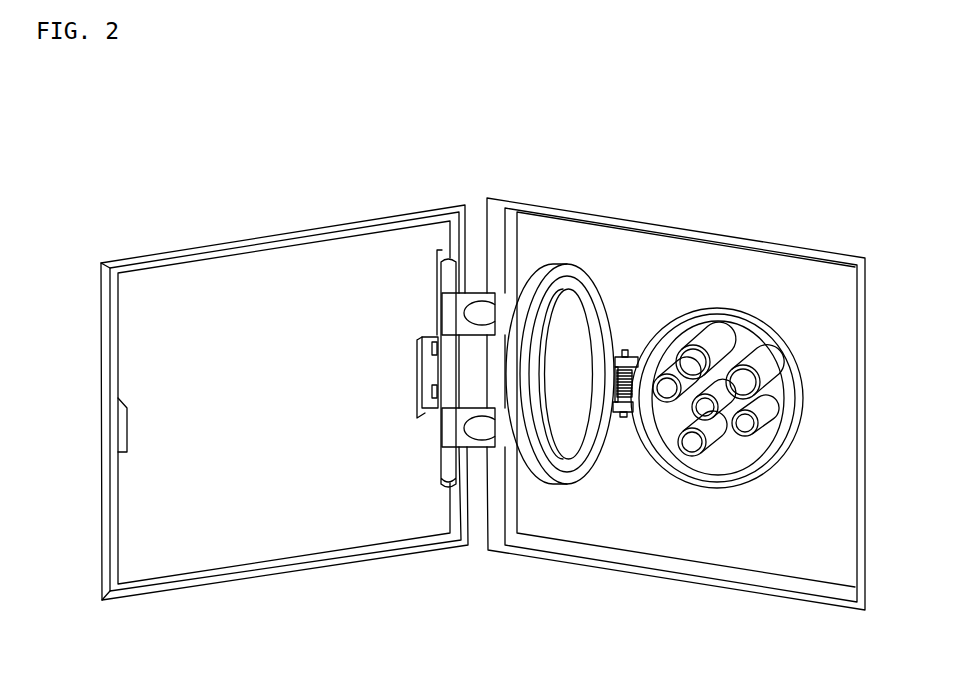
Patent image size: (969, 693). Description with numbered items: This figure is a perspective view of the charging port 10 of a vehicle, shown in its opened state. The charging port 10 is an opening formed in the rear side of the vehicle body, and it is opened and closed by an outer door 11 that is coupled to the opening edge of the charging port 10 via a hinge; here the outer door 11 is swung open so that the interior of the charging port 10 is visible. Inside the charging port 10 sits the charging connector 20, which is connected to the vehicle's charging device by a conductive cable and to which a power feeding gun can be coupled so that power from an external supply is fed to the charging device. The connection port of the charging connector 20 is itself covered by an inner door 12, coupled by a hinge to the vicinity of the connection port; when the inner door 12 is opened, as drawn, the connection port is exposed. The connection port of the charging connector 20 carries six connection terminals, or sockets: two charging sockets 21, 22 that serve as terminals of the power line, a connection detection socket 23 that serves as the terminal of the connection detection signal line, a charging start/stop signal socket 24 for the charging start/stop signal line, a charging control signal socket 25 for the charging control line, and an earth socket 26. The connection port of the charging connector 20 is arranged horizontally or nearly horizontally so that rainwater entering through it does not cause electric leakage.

The charging port 10 is at (565, 198).
The outer door 11 is at (319, 242).
The inner door 12 is at (550, 270).
The charging connector 20 is at (778, 338).
The charging socket 21 is at (771, 356).
The charging socket 22 is at (718, 343).
The connection detection socket 23 is at (764, 424).
The charging start/stop signal socket 24 is at (716, 406).
The charging control signal socket 25 is at (658, 400).
The earth socket 26 is at (691, 450).